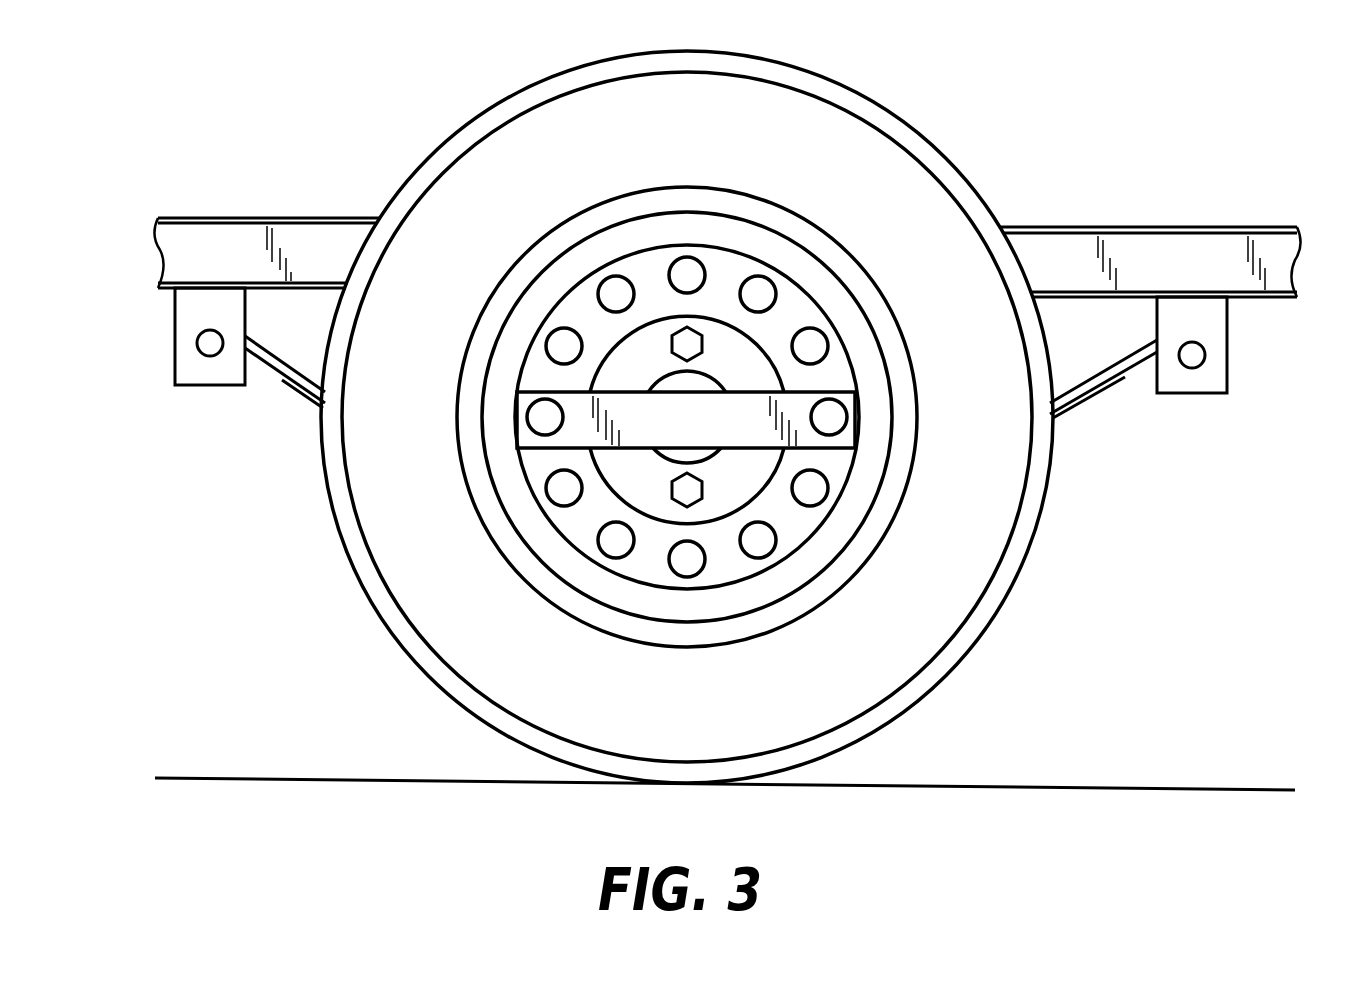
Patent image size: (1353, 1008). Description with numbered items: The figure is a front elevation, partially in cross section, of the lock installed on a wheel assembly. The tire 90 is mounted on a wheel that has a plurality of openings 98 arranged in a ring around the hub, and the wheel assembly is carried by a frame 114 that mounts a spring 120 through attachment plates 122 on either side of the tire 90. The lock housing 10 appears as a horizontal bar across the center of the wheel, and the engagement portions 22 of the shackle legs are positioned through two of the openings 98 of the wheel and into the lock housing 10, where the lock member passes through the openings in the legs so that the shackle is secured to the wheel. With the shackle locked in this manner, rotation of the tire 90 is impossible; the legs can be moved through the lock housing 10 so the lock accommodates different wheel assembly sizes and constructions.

The lock housing 10 is at (762, 432).
The engagement portions 22 is at (537, 418).
The tire 90 is at (850, 112).
The openings 98 is at (687, 257).
The frame 114 is at (1237, 228).
The spring 120 is at (297, 397).
The attachment plates 122 is at (192, 310).